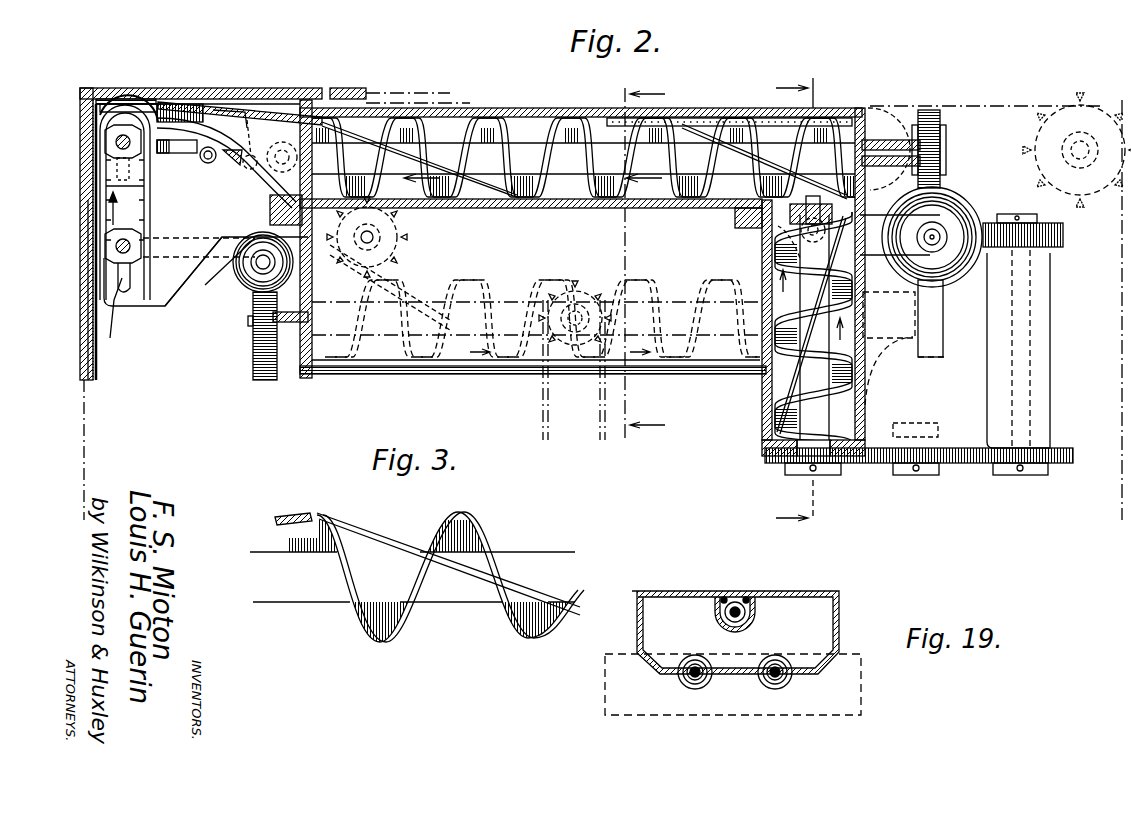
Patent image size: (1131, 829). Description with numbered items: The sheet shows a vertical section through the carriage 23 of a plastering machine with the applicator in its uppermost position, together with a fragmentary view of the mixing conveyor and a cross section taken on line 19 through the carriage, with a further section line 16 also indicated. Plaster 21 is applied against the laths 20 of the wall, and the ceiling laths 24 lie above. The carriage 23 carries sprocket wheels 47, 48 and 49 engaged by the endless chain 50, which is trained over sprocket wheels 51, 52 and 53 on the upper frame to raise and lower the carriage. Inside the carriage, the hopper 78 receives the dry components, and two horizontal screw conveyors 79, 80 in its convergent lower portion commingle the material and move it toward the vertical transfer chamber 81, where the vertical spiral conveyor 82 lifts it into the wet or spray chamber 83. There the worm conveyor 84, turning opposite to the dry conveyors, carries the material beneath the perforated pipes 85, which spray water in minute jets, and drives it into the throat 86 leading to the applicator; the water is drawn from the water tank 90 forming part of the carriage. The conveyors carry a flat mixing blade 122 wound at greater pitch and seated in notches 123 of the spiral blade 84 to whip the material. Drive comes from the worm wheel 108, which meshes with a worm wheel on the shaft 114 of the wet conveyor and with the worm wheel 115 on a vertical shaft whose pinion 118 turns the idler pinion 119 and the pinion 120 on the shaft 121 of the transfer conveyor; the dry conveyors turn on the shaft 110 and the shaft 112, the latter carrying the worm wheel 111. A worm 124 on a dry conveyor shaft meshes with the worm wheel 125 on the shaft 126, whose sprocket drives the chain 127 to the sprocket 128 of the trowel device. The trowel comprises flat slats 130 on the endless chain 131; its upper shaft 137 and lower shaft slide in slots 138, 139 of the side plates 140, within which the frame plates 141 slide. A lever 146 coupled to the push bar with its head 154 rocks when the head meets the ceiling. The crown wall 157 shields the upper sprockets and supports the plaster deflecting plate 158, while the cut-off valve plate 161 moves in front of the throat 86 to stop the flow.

In FIG. 2, the section line 16- 16 is at (805, 299).
In FIG. 2, the section line 19- 19 is at (638, 256).
In FIG. 2, the laths 20 is at (86, 280).
In FIG. 2, the plaster 21 is at (92, 350).
In FIG. 2, the carriage 23 is at (462, 108).
In FIG. 2, the ceiling laths 24 is at (313, 90).
In FIG. 2, the sprocket wheel 47 is at (400, 237).
In FIG. 2, the sprocket wheel 48 is at (762, 246).
In FIG. 2, the sprocket wheel 49 is at (586, 294).
In FIG. 2, the chain 50 is at (1120, 500).
In FIG. 2, the sprocket wheel 51 is at (250, 172).
In FIG. 2, the sprocket wheel 52 is at (898, 108).
In FIG. 2, the sprocket wheel 53 is at (1094, 104).
In FIG. 2, the hopper 78 is at (512, 310).
In FIG. 19, the hopper 78 is at (841, 628).
In FIG. 19, the screw conveyor 79 is at (697, 660).
In FIG. 2, the screw conveyor 80 is at (652, 280).
In FIG. 19, the screw conveyor 80 is at (779, 660).
In FIG. 2, the vertical transfer chamber 81 is at (770, 386).
In FIG. 2, the vertical spiral conveyor 82 is at (866, 392).
In FIG. 2, the wet or spray chamber 83 is at (506, 122).
In FIG. 2, the spiral or worm conveyor 84 is at (592, 206).
In FIG. 3, the spiral or worm conveyor 84 is at (488, 542).
In FIG. 19, the spiral or worm conveyor 84 is at (748, 612).
In FIG. 2, the perforated pipes 85 is at (706, 118).
In FIG. 19, the perforated pipes 85 is at (746, 598).
In FIG. 2, the throat 86 is at (240, 120).
In FIG. 19, the water tank 90 is at (628, 716).
In FIG. 2, the worm wheel 108 is at (950, 204).
In FIG. 19, the shaft 110 is at (694, 682).
In FIG. 2, the worm wheel 111 is at (934, 360).
In FIG. 19, the shaft 112 is at (784, 678).
In FIG. 2, the shaft 114 is at (948, 150).
In FIG. 2, the worm wheel 115 is at (1062, 242).
In FIG. 2, the pinion 118 is at (1062, 468).
In FIG. 2, the idler pinion 119 is at (950, 470).
In FIG. 2, the pinion 120 is at (856, 466).
In FIG. 2, the shaft 121 is at (802, 476).
In FIG. 2, the mixing blade 122 is at (946, 322).
In FIG. 3, the mixing blade 122 is at (385, 535).
In FIG. 2, the notches 123 is at (930, 128).
In FIG. 3, the notches 123 is at (312, 512).
In FIG. 2, the worm 124 is at (264, 372).
In FIG. 2, the worm wheel 125 is at (262, 264).
In FIG. 2, the shaft 126 is at (250, 274).
In FIG. 2, the chain 127 is at (214, 275).
In FIG. 2, the sprocket 128 is at (118, 300).
In FIG. 2, the slats 130 is at (150, 206).
In FIG. 2, the endless chain 131 is at (150, 222).
In FIG. 2, the upper shaft 137 is at (134, 148).
In FIG. 2, the slots 138 is at (136, 276).
In FIG. 2, the slots 139 is at (150, 188).
In FIG. 2, the side plates 140 is at (148, 298).
In FIG. 2, the frame plates 141 is at (145, 250).
In FIG. 2, the lever 146 is at (190, 142).
In FIG. 2, the head 154 is at (272, 108).
In FIG. 2, the crown wall 157 is at (84, 100).
In FIG. 2, the plaster deflecting plate 158 is at (118, 100).
In FIG. 2, the cut-off valve plate 161 is at (165, 106).